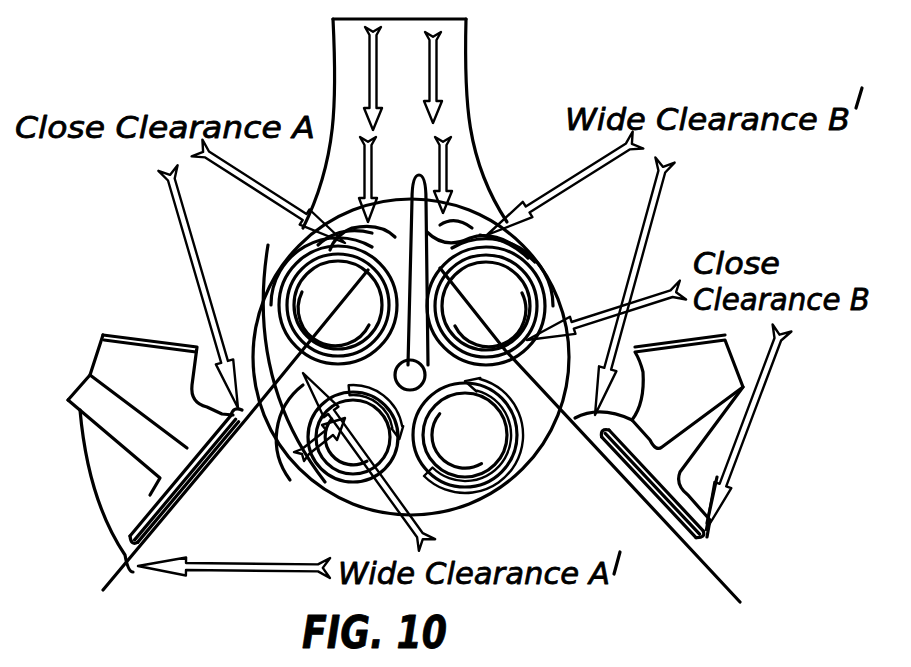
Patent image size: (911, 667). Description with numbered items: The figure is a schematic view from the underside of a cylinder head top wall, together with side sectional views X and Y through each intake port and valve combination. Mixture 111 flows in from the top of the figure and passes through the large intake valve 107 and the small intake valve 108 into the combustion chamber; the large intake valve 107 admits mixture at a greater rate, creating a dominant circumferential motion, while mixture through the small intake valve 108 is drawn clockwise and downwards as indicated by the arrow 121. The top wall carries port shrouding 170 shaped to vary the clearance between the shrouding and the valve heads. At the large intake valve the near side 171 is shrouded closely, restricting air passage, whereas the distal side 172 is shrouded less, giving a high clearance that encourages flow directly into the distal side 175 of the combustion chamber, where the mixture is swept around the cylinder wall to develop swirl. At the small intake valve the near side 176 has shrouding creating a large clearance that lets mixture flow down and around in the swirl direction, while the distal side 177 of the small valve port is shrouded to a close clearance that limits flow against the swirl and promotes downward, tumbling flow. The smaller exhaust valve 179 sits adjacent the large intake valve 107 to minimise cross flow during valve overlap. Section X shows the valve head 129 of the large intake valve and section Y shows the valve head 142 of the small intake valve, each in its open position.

The mixture 111 is at (455, 80).
The large intake valve 107 is at (324, 285).
The small intake valve 108 is at (498, 280).
The arrow 121 is at (305, 430).
The port shrouding 170 is at (545, 415).
The near side of the large intake valve 171 is at (343, 209).
The distal side of the large intake valve 172 is at (264, 330).
The distal side of the combustion chamber 175 is at (360, 478).
The near side of the small intake valve 176 is at (666, 286).
The distal side of the small valve port 177 is at (778, 428).
The smaller exhaust valve 179 is at (340, 470).
The valve head 129 is at (143, 445).
The valve head 142 is at (708, 428).